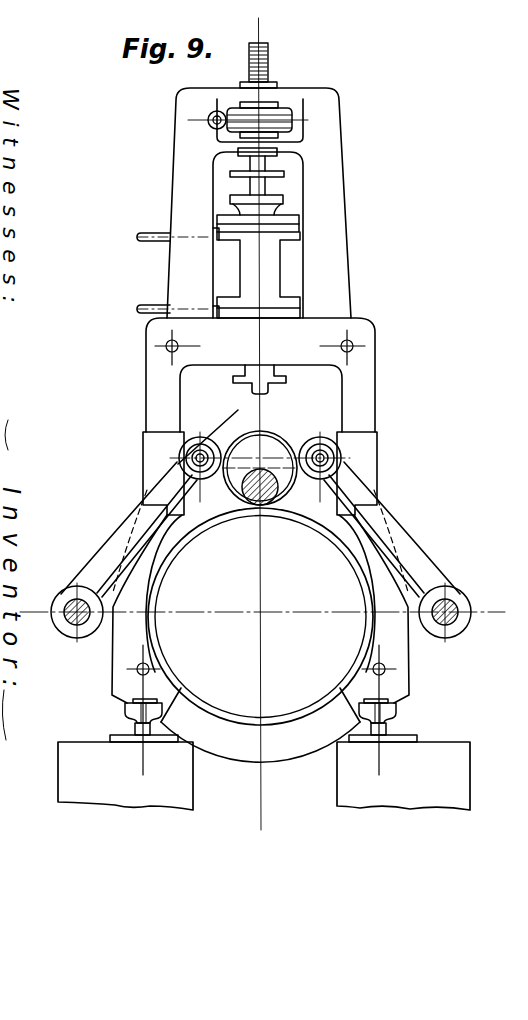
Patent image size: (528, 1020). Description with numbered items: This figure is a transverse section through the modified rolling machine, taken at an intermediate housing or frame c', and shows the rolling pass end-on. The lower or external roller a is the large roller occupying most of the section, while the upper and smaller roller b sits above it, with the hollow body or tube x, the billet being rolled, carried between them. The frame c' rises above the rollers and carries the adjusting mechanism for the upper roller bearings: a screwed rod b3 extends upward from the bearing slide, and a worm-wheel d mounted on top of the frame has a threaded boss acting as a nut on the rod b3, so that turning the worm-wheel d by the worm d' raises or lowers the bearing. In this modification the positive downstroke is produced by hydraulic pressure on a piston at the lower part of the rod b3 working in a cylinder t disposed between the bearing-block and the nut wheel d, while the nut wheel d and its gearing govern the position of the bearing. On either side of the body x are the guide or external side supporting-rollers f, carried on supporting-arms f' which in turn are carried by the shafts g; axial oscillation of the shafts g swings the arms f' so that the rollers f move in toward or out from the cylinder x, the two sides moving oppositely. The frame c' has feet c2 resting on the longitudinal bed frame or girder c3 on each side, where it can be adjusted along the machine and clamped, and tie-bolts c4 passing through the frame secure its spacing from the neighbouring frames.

The lower or external roller a is at (260, 616).
The upper and smaller roller b is at (258, 479).
The hollow body or tube x is at (263, 437).
The screwed rods b3 is at (268, 62).
The intermediate housing or frame c' is at (262, 425).
The feet c2 is at (417, 713).
The longitudinal bed frame or girder c3 is at (433, 732).
The tie-bolts c4 is at (417, 692).
The worm-wheels d is at (288, 102).
The worms d' is at (181, 108).
The cylinders t is at (256, 237).
The guide or external side supporting-rollers f is at (260, 445).
The supporting-arms f' is at (260, 503).
The shafts g is at (67, 607).